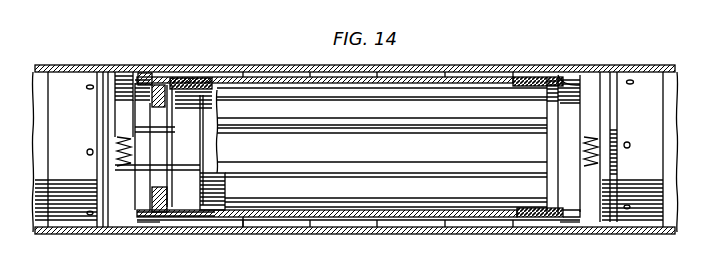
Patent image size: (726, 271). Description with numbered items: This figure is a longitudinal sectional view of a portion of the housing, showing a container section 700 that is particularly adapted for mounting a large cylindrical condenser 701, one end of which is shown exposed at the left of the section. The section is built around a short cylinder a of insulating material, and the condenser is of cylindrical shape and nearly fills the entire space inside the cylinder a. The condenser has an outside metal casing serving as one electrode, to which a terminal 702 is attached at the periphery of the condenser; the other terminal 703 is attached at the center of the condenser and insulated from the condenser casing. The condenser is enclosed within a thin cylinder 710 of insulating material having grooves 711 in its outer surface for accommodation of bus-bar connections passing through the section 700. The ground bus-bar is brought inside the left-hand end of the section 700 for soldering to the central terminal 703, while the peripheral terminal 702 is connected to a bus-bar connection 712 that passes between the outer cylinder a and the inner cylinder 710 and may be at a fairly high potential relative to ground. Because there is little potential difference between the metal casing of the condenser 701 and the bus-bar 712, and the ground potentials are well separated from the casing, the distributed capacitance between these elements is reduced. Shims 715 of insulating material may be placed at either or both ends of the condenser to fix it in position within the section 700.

The section 700 is at (296, 178).
The large cylindrical condenser 701 is at (213, 198).
The terminal 702 is at (190, 90).
The central terminal 703 is at (180, 214).
The thin cylinder of insulating material 710 is at (354, 190).
The grooves 711 is at (405, 168).
The bus-bar connection 712 is at (117, 99).
The shims 715 is at (177, 150).
The cylinder a is at (268, 219).